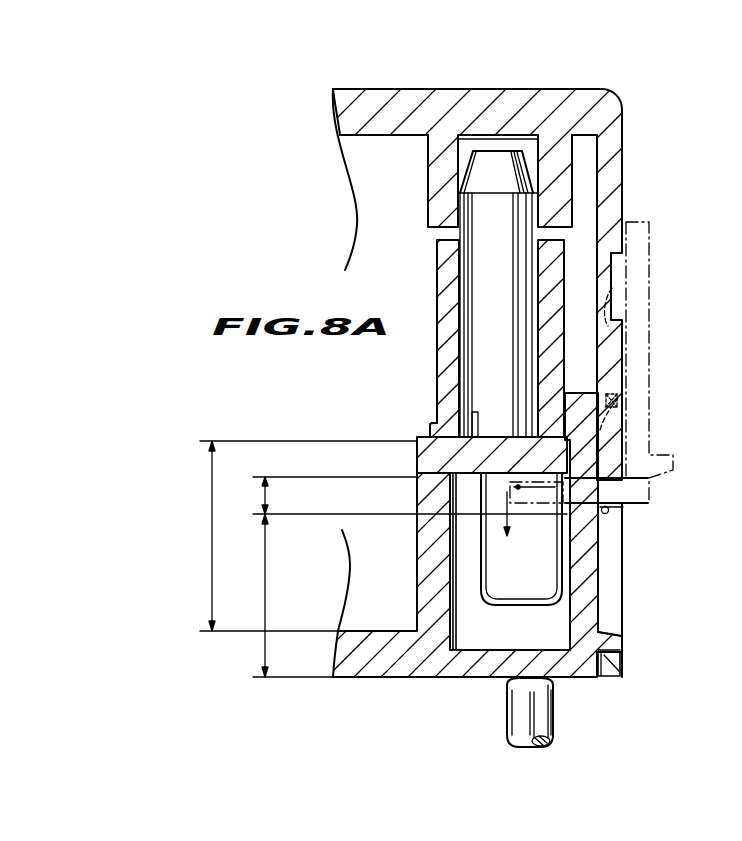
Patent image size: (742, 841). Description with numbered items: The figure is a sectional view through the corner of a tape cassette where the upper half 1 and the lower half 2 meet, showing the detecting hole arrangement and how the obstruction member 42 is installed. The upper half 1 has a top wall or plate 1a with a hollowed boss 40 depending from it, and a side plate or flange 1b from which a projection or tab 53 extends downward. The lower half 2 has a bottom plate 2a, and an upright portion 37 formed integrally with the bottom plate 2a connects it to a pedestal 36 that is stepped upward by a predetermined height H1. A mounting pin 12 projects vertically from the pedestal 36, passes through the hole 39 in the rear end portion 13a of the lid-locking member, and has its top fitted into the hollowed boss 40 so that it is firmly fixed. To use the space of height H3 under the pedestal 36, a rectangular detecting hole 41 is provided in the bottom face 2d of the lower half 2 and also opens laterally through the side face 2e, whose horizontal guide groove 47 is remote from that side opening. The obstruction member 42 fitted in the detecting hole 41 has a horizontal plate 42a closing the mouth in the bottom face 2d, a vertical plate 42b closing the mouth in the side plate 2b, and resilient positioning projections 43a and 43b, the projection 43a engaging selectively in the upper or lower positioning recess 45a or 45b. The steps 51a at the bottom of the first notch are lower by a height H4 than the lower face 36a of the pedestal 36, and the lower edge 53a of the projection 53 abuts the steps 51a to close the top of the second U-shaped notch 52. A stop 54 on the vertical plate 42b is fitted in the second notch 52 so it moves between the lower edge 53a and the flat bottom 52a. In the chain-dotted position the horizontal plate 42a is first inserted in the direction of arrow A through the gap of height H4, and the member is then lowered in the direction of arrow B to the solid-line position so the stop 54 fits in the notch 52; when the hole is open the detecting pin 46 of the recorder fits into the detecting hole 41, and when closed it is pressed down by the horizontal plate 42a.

The upper half 1 is at (333, 116).
The top wall or plate 1a is at (343, 125).
The side plate or flange 1b is at (617, 175).
The lower half 2 is at (360, 680).
The bottom plate 2a is at (345, 648).
The side plate 2b is at (607, 580).
The bottom face 2d is at (413, 678).
The side face 2e is at (624, 519).
The mounting pin 12 is at (480, 226).
The rear end portion 13a is at (432, 425).
The pedestal 36 is at (503, 442).
The lower face of the pedestal 36a is at (455, 500).
The upright portion 37 is at (430, 536).
The hole 39 is at (483, 270).
The hollowed boss 40 is at (430, 178).
The detecting hole 41 is at (482, 678).
The obstruction member 42 is at (648, 406).
The horizontal plate 42a is at (500, 655).
The vertical plate 42b is at (588, 596).
The positioning projection 43a is at (616, 410).
The positioning projection 43b is at (457, 428).
The upper positioning recess 45a is at (617, 290).
The lower positioning recess 45b is at (630, 392).
The detecting pin 46 is at (553, 715).
The horizontal guide groove 47 is at (613, 263).
The steps 51a is at (623, 516).
The second U-shaped notch 52 is at (617, 558).
The flat bottom 52a is at (621, 652).
The projection or tab 53 is at (613, 350).
The lower edge 53a is at (628, 503).
The stop 54 is at (622, 632).
The height H1 is at (212, 537).
The height H3 is at (265, 570).
The height H4 is at (265, 497).
The arrow A is at (530, 488).
The arrow B is at (504, 513).